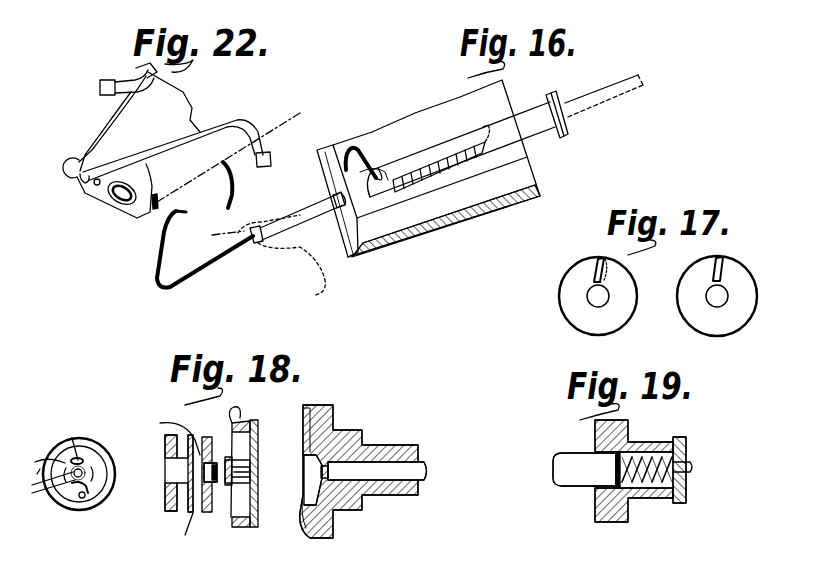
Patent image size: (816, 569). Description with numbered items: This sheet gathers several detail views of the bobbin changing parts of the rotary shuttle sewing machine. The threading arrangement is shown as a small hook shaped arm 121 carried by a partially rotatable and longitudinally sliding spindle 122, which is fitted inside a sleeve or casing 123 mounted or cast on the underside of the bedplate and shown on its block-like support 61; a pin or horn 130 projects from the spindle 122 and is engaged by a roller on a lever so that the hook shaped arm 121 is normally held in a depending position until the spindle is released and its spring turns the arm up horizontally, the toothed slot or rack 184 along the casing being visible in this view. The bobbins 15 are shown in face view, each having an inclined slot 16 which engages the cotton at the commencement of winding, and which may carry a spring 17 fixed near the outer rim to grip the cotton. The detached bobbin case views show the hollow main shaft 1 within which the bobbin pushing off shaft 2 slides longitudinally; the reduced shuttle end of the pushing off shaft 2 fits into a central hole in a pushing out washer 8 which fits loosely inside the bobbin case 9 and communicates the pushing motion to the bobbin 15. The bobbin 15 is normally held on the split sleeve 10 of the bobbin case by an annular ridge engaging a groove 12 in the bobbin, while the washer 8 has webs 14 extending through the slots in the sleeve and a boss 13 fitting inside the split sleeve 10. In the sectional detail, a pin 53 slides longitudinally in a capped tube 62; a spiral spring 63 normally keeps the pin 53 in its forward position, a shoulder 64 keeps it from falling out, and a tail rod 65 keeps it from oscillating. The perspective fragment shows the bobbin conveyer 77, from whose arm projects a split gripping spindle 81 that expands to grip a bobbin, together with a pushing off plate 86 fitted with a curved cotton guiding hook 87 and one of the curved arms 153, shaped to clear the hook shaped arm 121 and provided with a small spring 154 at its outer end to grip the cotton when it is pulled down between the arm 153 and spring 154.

In FIG. 22, the bobbin conveyer 77 is at (131, 145).
In FIG. 22, the arm 153 is at (155, 78).
In FIG. 22, the spring 154 is at (100, 86).
In FIG. 22, the pushing off plate 86 is at (100, 192).
In FIG. 22, the gripping spindle 81 is at (118, 200).
In FIG. 22, the cotton guiding hook 87 is at (158, 203).
In FIG. 22, the hook shaped arm 121 is at (245, 183).
In FIG. 22, the spindle 122 is at (292, 226).
In FIG. 16, the spindle 122 is at (339, 200).
In FIG. 22, the casing 123 is at (356, 189).
In FIG. 16, the casing 123 is at (505, 136).
In FIG. 16, the block 61 is at (428, 168).
In FIG. 16, the rack 184 is at (448, 168).
In FIG. 16, the pin or horn 130 is at (400, 131).
In FIG. 17, the bobbin 15 is at (658, 296).
In FIG. 18, the bobbin 15 is at (168, 498).
In FIG. 17, the inclined slot 16 is at (740, 250).
In FIG. 17, the spring 17 is at (737, 261).
In FIG. 18, the web 14 is at (234, 460).
In FIG. 18, the groove 12 is at (173, 478).
In FIG. 18, the pushing out washer 8 is at (210, 485).
In FIG. 18, the bobbin case 9 is at (258, 508).
In FIG. 18, the boss 13 is at (243, 484).
In FIG. 18, the split sleeve 10 is at (258, 470).
In FIG. 18, the main shaft 1 is at (381, 445).
In FIG. 18, the pushing off shaft 2 is at (407, 472).
In FIG. 19, the capped tube 62 is at (638, 444).
In FIG. 19, the spiral spring 63 is at (660, 452).
In FIG. 19, the shoulder 64 is at (637, 496).
In FIG. 19, the pin 53 is at (586, 470).
In FIG. 19, the tail rod 65 is at (692, 467).